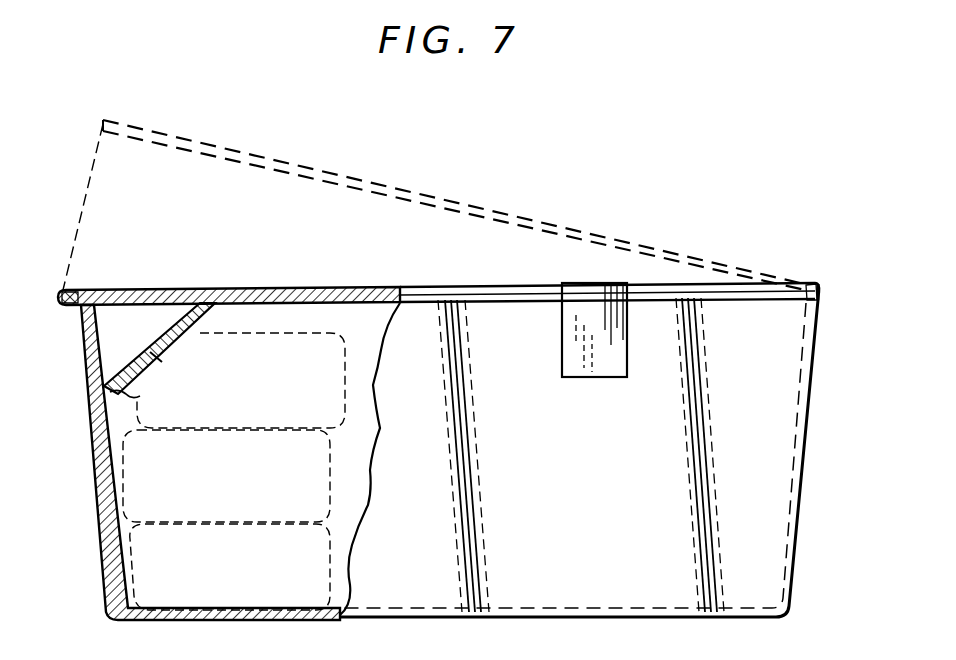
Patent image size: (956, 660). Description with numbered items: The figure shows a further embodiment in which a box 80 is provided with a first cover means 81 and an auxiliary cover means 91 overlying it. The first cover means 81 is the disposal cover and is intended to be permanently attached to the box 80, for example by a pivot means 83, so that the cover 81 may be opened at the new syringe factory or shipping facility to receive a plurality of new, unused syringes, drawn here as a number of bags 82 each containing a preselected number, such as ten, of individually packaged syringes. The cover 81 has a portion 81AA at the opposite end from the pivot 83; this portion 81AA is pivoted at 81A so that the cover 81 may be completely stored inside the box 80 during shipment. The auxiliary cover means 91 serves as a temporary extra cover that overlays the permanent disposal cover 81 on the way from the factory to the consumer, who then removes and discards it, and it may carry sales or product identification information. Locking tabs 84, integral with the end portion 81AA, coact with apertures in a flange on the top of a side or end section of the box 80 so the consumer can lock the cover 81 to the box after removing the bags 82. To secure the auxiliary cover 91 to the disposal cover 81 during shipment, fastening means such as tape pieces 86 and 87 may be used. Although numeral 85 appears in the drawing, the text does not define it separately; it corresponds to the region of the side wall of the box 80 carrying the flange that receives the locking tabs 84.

The box 80 is at (598, 160).
The first cover means 81 is at (258, 156).
The pivot 81A is at (210, 304).
The end portion of cover 81AA is at (156, 354).
The bags 82 is at (312, 386).
The pivot means 83 is at (814, 290).
The locking tabs 84 is at (140, 396).
The left side wall 85 is at (98, 452).
The tape piece 86 is at (584, 376).
The tape piece 87 is at (76, 290).
The auxiliary cover means 91 is at (240, 290).